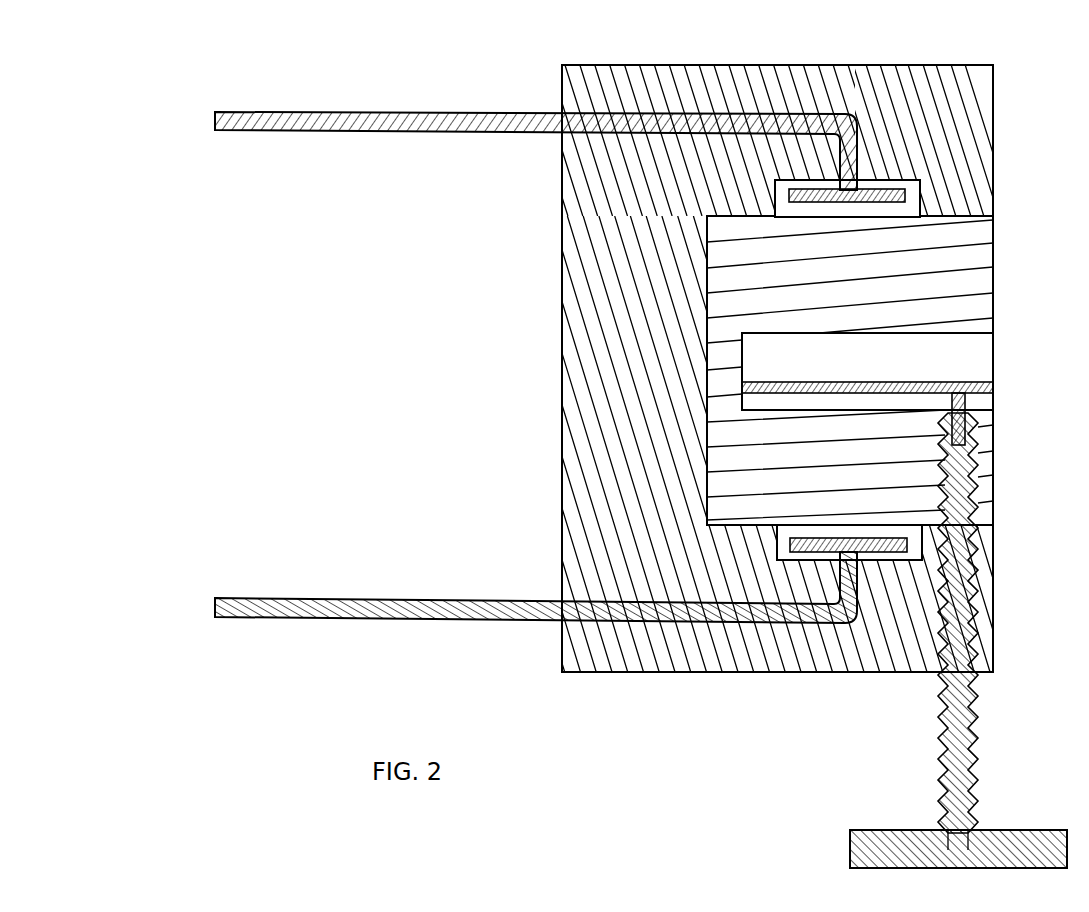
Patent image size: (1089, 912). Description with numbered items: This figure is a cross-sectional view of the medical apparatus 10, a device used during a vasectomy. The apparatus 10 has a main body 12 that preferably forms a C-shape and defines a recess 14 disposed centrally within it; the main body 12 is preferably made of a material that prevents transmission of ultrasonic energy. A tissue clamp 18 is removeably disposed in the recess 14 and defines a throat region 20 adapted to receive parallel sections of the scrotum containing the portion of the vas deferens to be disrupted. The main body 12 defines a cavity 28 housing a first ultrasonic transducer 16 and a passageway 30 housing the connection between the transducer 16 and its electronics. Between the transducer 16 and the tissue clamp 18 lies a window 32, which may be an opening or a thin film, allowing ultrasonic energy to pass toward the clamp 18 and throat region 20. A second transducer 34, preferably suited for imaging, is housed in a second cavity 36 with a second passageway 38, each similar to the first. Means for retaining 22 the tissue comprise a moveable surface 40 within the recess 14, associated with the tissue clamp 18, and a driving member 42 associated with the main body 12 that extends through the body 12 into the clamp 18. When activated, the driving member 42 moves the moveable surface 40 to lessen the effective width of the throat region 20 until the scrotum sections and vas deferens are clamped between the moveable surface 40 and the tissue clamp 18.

The medical apparatus 10 is at (1040, 93).
The main body 12 is at (934, 65).
The recess 14 is at (972, 218).
The first ultrasonic transducer 16 is at (822, 205).
The tissue clamp 18 is at (993, 282).
The throat region 20 is at (965, 352).
The means for retaining 22 is at (977, 503).
The cavity 28 is at (917, 200).
The passageway 30 is at (630, 118).
The window 32 is at (879, 218).
The second transducer 34 is at (845, 537).
The second cavity 36 is at (797, 520).
The second passageway 38 is at (632, 614).
The moveable surface 40 is at (993, 388).
The driving member 42 is at (978, 712).